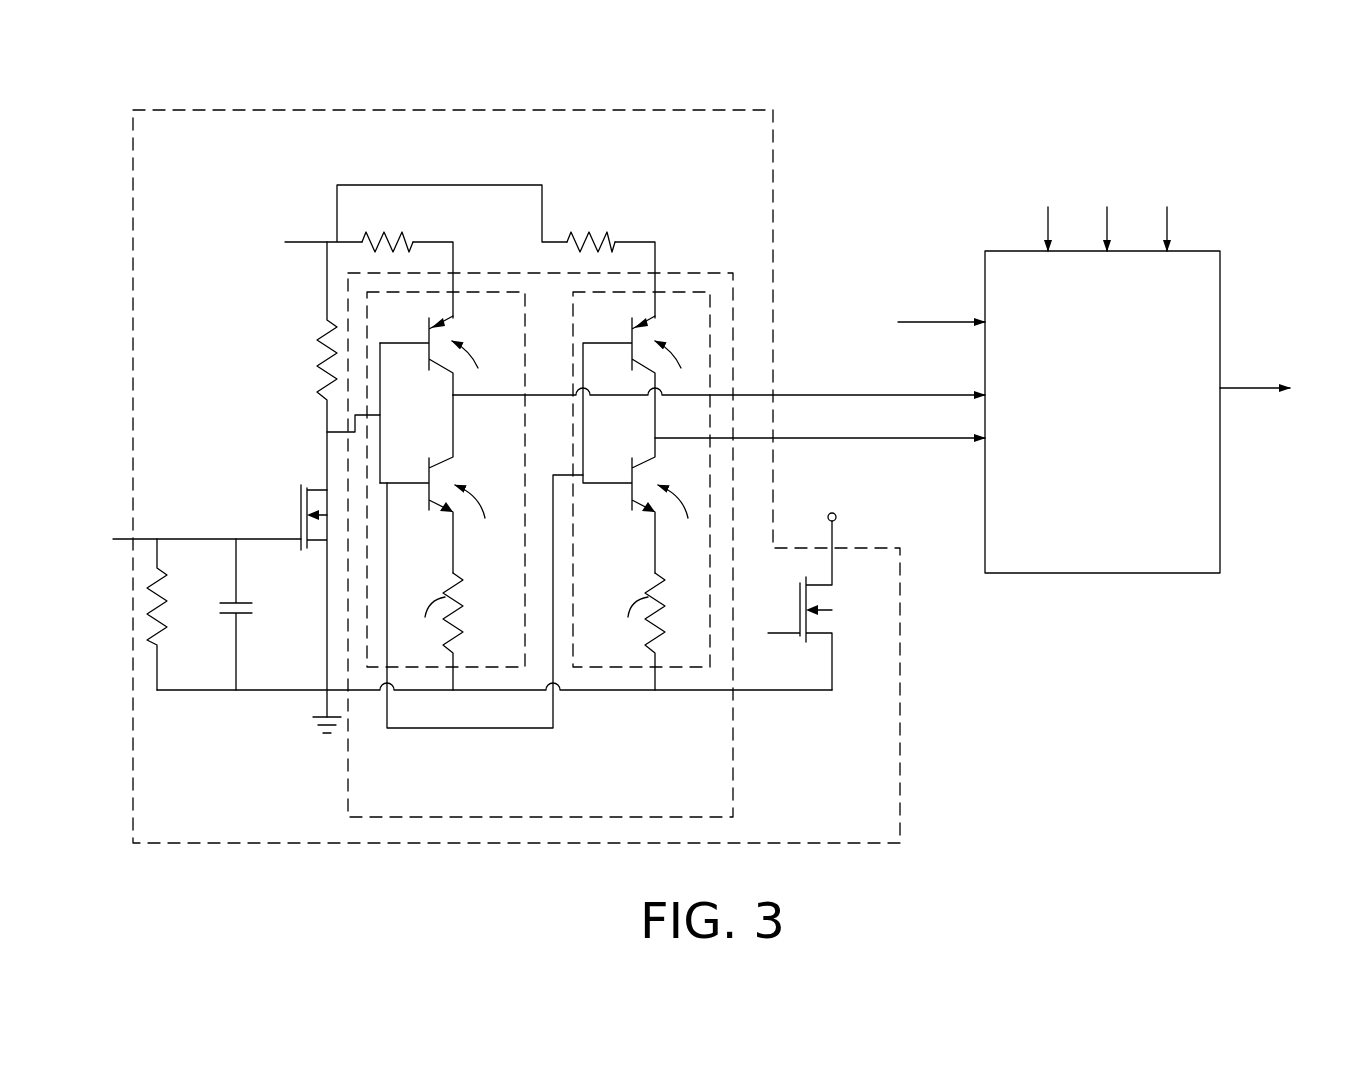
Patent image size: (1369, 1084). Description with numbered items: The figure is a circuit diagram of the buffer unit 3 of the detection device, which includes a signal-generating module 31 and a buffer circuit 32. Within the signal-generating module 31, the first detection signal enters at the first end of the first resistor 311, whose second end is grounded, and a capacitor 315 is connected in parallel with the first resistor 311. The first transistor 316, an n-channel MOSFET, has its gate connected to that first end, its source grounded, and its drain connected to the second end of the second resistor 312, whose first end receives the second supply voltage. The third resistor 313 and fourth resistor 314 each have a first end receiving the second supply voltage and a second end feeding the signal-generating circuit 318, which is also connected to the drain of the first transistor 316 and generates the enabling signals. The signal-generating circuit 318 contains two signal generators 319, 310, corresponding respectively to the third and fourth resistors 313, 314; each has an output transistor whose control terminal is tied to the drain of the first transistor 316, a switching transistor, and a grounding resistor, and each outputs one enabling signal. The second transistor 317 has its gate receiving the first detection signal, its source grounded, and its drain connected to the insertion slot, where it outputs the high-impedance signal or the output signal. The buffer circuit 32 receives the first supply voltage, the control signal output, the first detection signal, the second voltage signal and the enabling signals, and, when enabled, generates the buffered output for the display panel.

The buffer unit 3 is at (1276, 143).
The signal-generating module 31 is at (601, 108).
The buffer circuit 32 is at (1224, 310).
The signal generator 310 is at (627, 668).
The first resistor 311 is at (163, 613).
The second resistor 312 is at (320, 370).
The third resistor 313 is at (402, 236).
The fourth resistor 314 is at (607, 238).
The capacitor 315 is at (242, 615).
The first transistor 316 is at (292, 510).
The second transistor 317 is at (840, 597).
The signal-generating circuit 318 is at (735, 763).
The signal generator 319 is at (377, 668).